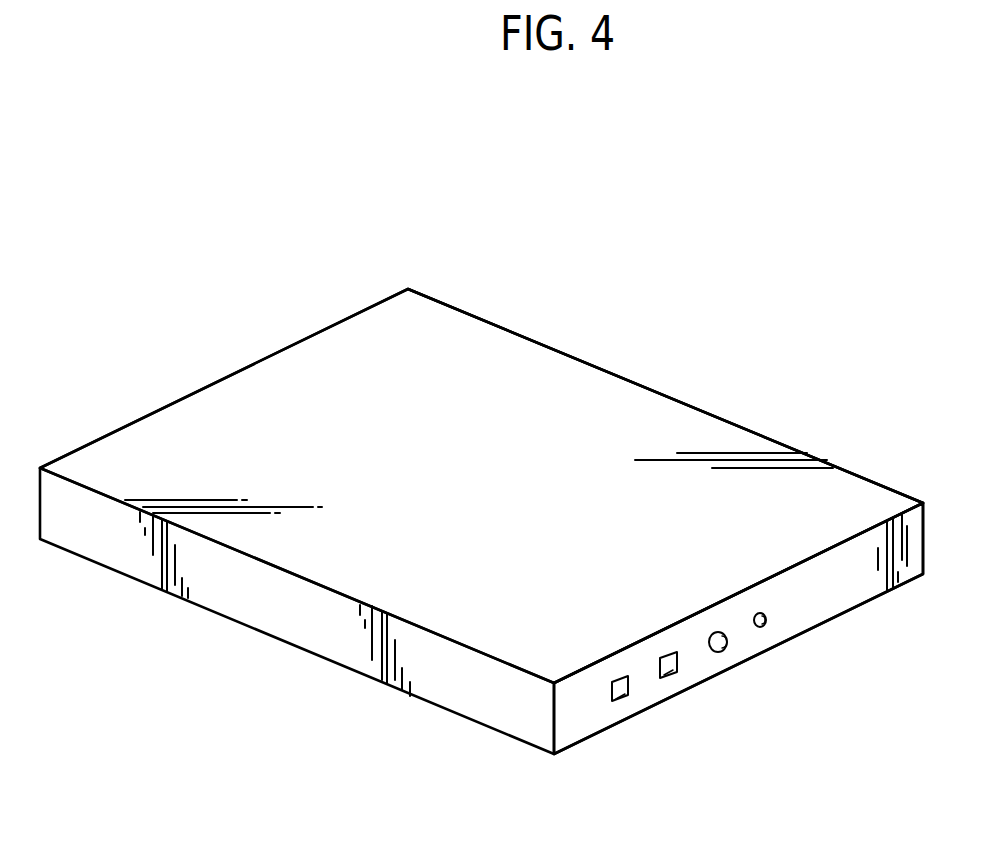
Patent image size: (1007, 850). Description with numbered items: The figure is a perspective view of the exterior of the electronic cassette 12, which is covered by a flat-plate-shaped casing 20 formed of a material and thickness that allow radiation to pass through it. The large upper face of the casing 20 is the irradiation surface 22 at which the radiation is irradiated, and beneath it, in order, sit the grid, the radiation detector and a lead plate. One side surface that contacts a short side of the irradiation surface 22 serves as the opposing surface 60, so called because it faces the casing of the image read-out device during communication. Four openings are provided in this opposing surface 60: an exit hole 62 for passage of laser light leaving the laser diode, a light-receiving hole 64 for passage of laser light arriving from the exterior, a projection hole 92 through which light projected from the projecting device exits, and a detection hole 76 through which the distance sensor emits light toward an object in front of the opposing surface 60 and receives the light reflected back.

The electronic cassette 12 is at (624, 352).
The casing 20 is at (698, 407).
The irradiation surface 22 is at (468, 357).
The opposing surface 60 is at (572, 722).
The exit hole 62 is at (765, 615).
The light-receiving hole 64 is at (730, 640).
The detection hole 76 is at (629, 691).
The projection hole 92 is at (677, 667).